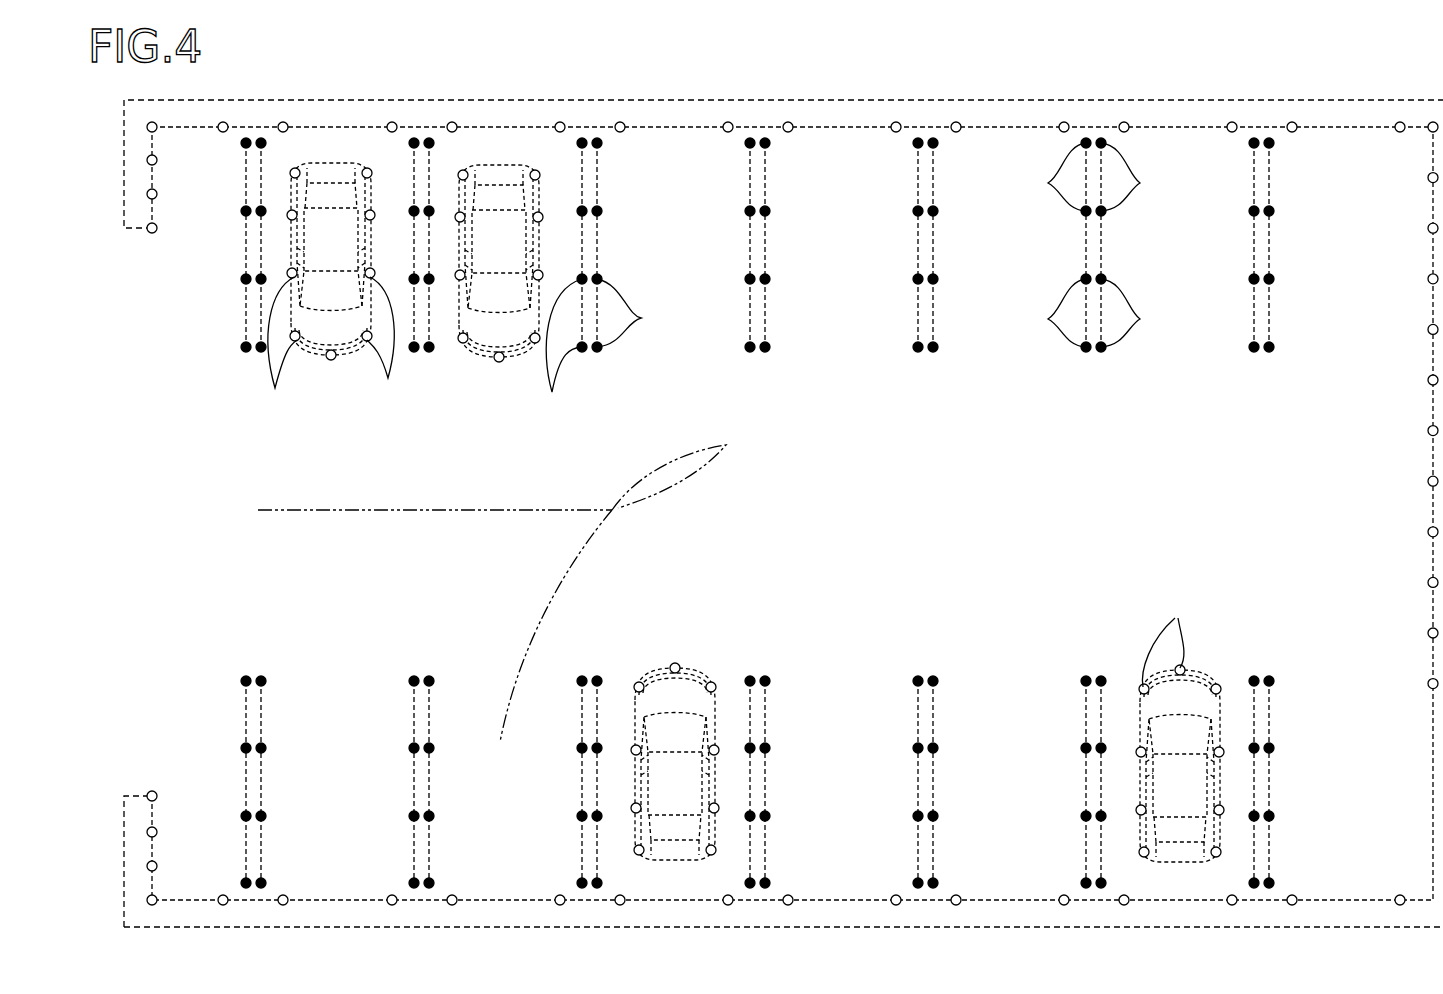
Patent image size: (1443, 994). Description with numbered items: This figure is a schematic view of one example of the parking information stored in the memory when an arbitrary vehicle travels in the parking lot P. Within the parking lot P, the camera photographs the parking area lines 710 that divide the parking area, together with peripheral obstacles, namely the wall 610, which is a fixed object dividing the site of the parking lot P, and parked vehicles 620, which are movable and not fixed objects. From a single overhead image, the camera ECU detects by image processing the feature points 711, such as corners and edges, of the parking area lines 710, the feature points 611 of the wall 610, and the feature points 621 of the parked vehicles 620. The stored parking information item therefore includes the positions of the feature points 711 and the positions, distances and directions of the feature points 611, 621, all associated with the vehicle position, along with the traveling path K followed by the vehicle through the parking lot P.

The wall 610 is at (677, 115).
The feature points of the obstacle 611 is at (223, 133).
The parked vehicle 620 is at (325, 362).
The feature points of the parked vehicle 621 is at (275, 388).
The parking area line 710 is at (246, 310).
The feature points of the parking area line 711 is at (241, 211).
The traveling path K is at (570, 560).
The parking lot P is at (1288, 95).